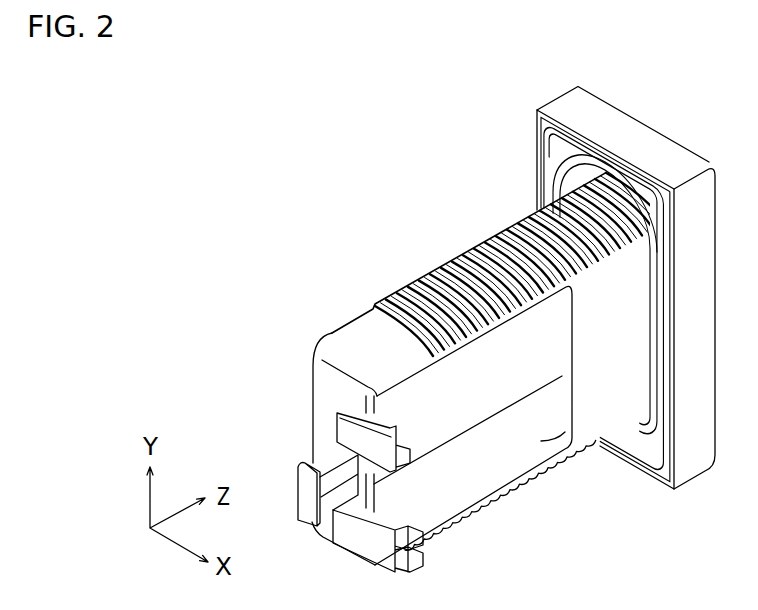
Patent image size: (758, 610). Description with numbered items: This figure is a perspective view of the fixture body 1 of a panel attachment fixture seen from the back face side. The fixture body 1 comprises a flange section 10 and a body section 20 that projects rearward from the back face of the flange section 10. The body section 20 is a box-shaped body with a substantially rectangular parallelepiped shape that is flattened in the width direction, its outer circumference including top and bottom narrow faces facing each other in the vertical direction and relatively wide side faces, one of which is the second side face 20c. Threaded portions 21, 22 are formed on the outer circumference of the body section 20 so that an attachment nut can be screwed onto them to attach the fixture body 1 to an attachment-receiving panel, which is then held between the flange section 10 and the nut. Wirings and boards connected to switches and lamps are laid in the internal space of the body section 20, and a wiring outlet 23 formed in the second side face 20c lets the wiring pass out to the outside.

The fixture body 1 is at (277, 170).
The flange section 10 is at (550, 92).
The body section 20 is at (350, 313).
The threaded portion 21 is at (512, 258).
The threaded portion 22 is at (407, 283).
The wiring outlet 23 is at (505, 461).
The second side face 20c is at (583, 407).